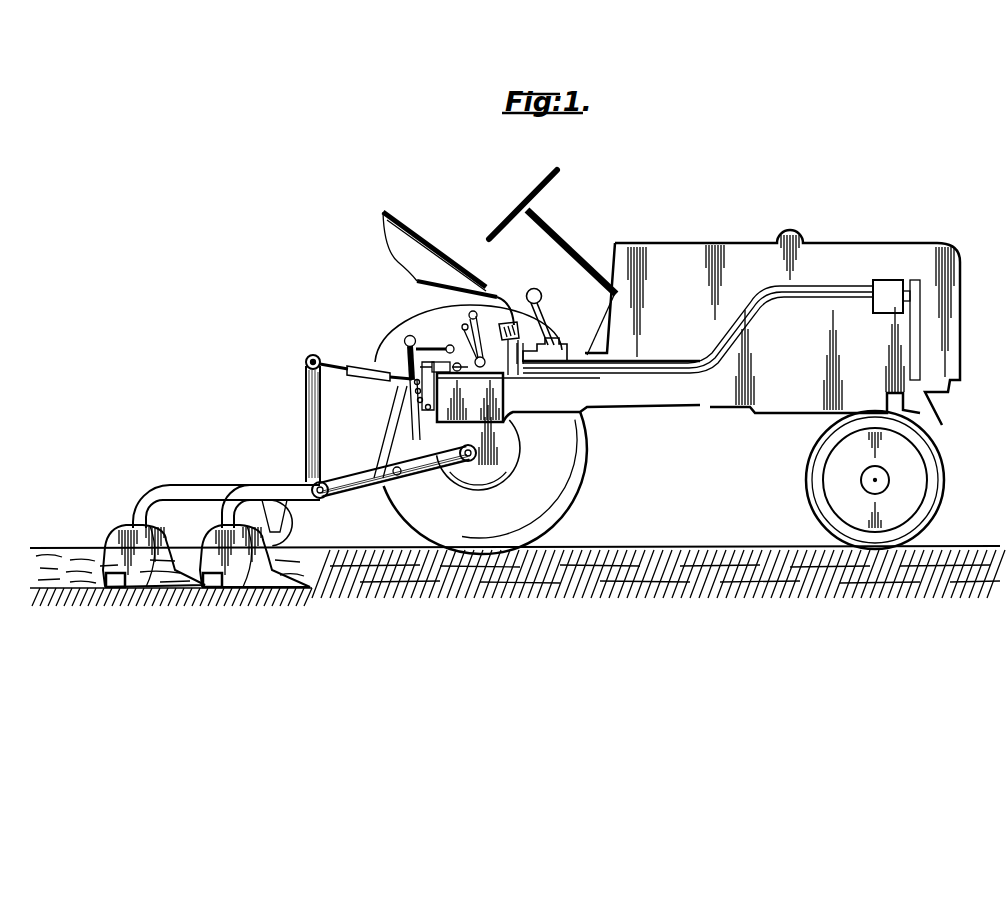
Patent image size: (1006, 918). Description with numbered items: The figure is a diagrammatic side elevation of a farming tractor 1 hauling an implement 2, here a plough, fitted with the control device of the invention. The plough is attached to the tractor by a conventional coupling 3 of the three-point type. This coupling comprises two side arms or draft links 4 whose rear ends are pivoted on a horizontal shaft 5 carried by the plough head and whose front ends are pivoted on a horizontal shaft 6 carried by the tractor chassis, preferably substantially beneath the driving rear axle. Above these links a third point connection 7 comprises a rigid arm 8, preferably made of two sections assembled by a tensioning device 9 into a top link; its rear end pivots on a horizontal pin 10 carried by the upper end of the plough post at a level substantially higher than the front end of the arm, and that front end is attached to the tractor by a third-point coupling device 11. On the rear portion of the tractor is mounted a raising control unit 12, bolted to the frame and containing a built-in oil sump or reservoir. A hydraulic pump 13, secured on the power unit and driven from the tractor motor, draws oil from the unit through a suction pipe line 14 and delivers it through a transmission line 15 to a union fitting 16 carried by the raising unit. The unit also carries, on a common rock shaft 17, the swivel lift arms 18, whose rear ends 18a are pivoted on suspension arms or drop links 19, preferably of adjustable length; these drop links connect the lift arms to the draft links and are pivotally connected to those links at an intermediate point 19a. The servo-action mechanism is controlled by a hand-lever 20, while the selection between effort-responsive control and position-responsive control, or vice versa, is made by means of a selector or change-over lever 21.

The farming tractor 1 is at (668, 258).
The implement 2 is at (172, 485).
The coupling 3 is at (388, 392).
The draft links 4 is at (347, 485).
The horizontal shaft 5 is at (316, 485).
The horizontal shaft 6 is at (470, 463).
The third point connection 7 is at (372, 387).
The rigid arm 8 is at (330, 364).
The tensioning device 9 is at (365, 370).
The horizontal pin 10 is at (306, 362).
The third-point coupling device 11 is at (407, 370).
The raising control unit 12 is at (505, 360).
The hydraulic pump 13 is at (890, 290).
The suction pipe line 14 is at (700, 373).
The transmission line 15 is at (817, 282).
The union fitting 16 is at (528, 352).
The rock shaft 17 is at (450, 345).
The lift arms 18 is at (430, 343).
The rear ends 18a is at (405, 332).
The drop links 19 is at (436, 440).
The intermediate point 19a is at (395, 483).
The hand-lever 20 is at (462, 330).
The change-over lever 21 is at (466, 324).